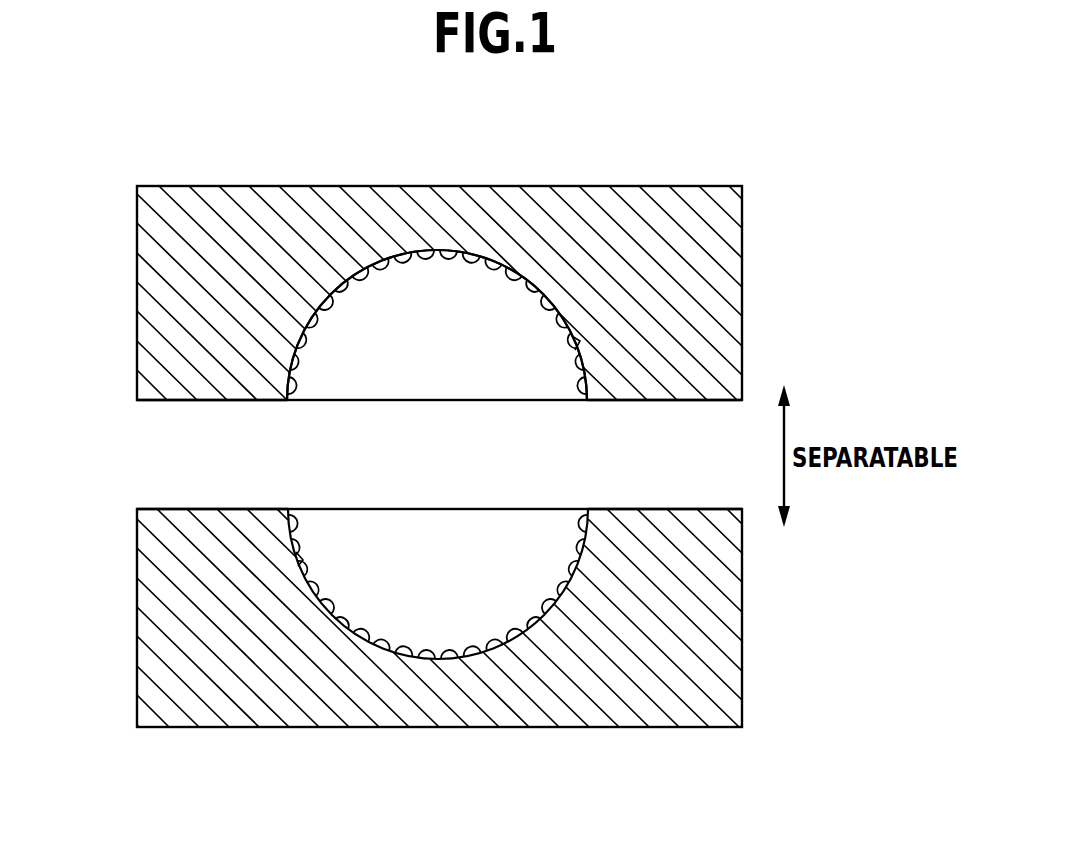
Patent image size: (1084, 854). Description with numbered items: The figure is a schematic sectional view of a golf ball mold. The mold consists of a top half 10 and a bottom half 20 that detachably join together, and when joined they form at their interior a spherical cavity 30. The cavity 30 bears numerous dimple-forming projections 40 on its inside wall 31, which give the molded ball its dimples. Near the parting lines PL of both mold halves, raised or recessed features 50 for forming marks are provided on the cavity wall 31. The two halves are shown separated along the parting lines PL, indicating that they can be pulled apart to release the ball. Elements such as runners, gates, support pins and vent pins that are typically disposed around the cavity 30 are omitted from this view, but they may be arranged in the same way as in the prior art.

The top half 10 is at (661, 221).
The bottom half 20 is at (203, 697).
The spherical cavity 30 is at (486, 362).
The inside wall 31 is at (336, 282).
The dimple-forming projections 40 is at (362, 268).
The raised or recessed features 50 is at (583, 349).
The parting lines PL is at (177, 401).